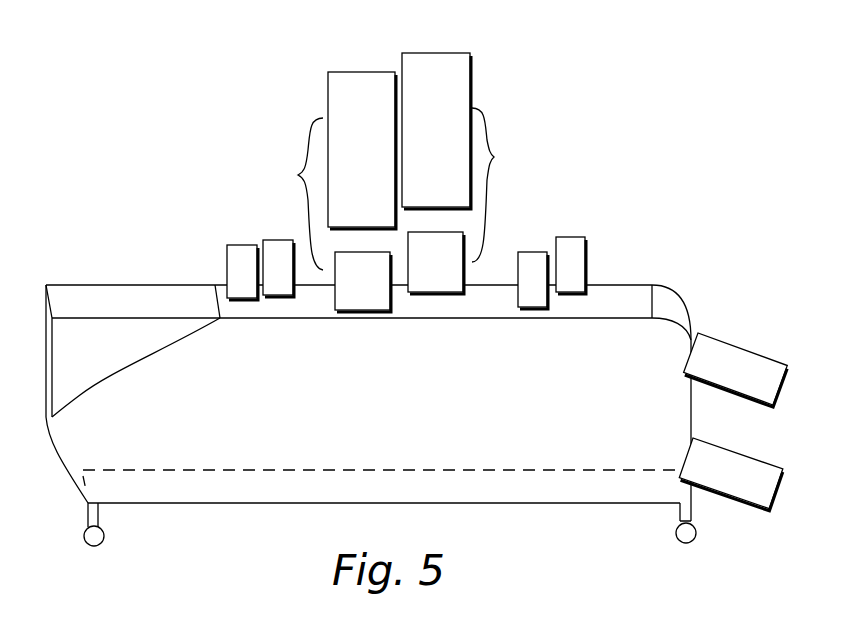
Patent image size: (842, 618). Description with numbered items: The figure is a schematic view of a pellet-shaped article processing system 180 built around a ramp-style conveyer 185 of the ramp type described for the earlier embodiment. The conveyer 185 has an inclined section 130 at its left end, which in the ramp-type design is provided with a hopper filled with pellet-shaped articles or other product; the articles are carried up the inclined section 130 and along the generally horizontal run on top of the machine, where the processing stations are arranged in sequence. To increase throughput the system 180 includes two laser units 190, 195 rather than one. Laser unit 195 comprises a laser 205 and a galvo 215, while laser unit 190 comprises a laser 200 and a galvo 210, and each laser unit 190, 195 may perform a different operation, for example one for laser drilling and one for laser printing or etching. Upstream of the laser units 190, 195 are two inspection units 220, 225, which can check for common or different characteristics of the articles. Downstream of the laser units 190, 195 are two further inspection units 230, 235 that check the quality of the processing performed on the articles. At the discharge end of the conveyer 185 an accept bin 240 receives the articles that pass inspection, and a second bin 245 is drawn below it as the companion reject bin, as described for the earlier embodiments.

The pellet-shaped article processing system 180 is at (140, 90).
The ramp-style conveyer 185 is at (155, 310).
The inclined section 130 is at (118, 368).
The laser unit 190 is at (505, 185).
The laser unit 195 is at (292, 194).
The laser 200 is at (456, 142).
The laser 205 is at (382, 162).
The galvo 210 is at (456, 270).
The galvo 215 is at (381, 289).
The inspection unit 220 is at (233, 263).
The inspection unit 225 is at (280, 250).
The inspection unit 230 is at (528, 260).
The inspection unit 235 is at (573, 262).
The accept bin 240 is at (755, 379).
The output tray 245 is at (748, 483).